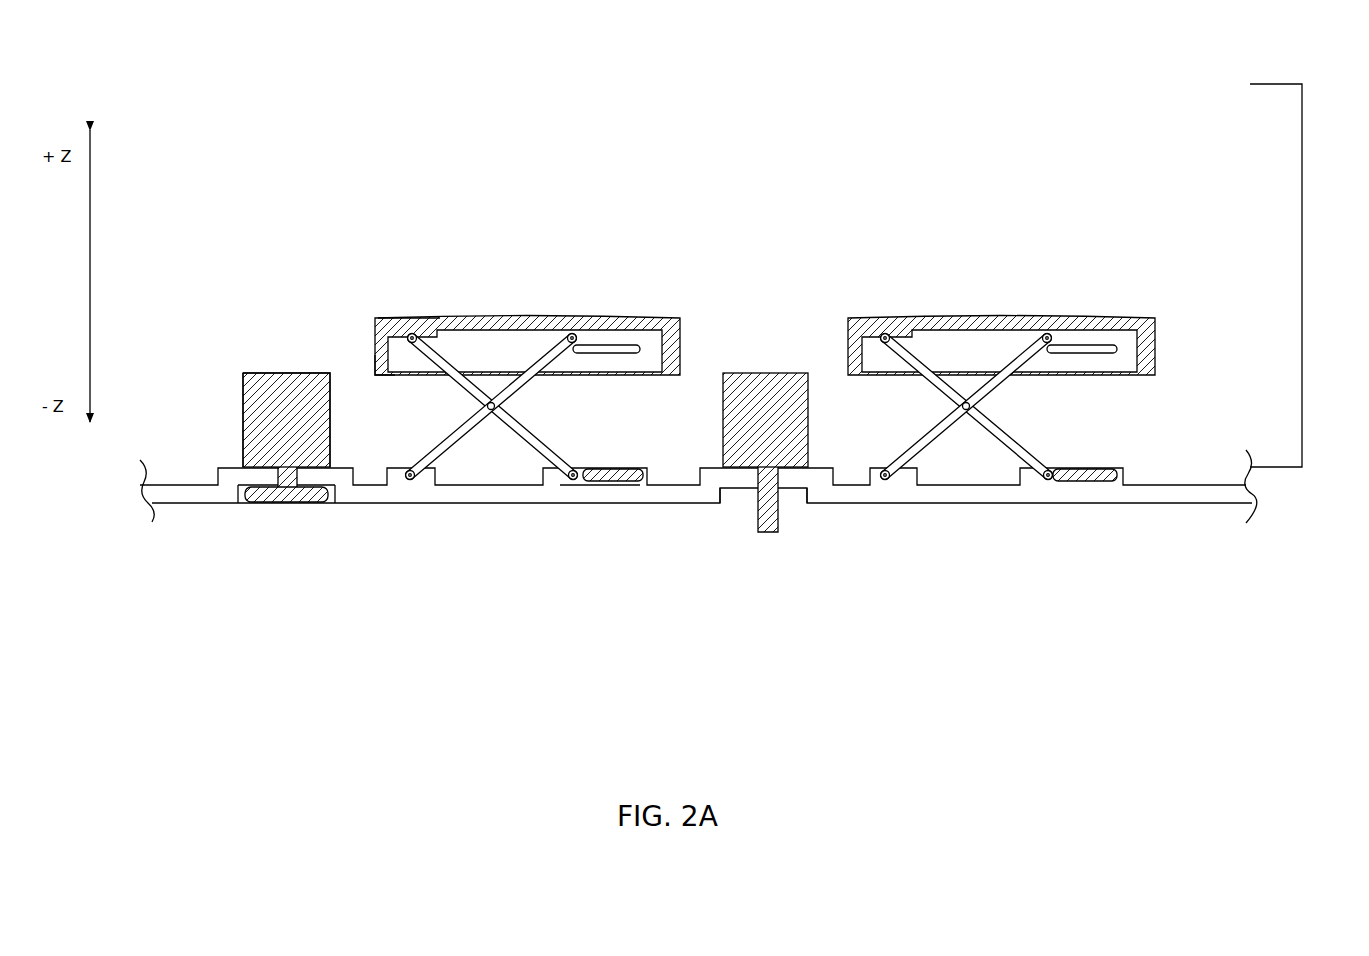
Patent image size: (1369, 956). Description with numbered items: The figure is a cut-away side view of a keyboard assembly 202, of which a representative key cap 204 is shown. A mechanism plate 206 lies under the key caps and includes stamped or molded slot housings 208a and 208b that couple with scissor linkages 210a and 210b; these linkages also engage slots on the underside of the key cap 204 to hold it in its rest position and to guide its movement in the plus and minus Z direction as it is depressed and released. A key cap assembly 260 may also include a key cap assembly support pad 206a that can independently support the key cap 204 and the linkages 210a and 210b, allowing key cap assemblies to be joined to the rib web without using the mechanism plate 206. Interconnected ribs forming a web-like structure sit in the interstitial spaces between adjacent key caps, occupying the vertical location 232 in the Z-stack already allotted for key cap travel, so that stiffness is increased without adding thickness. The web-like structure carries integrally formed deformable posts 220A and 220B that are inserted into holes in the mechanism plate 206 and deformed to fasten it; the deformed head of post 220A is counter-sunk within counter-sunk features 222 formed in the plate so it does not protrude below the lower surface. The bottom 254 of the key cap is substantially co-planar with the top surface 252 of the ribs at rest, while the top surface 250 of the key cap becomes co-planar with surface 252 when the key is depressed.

The keyboard assembly 202 is at (317, 136).
The key cap 204 is at (470, 350).
The mechanism plate 206 is at (858, 503).
The key cap assembly support pad 206a is at (610, 490).
The slot housing 208a is at (412, 486).
The slot housing 208b is at (616, 472).
The scissor linkage 210a is at (444, 382).
The scissor linkage 210b is at (520, 415).
The deformable post 220A is at (285, 503).
The deformable post 220B is at (758, 520).
The counter-sunk features 222 is at (240, 505).
The vertical location 232 is at (1302, 275).
The top surface of the key cap 250 is at (362, 318).
The top surface of the ribs 252 is at (297, 373).
The bottom of the key cap 254 is at (377, 380).
The key cap assembly 260 is at (566, 268).